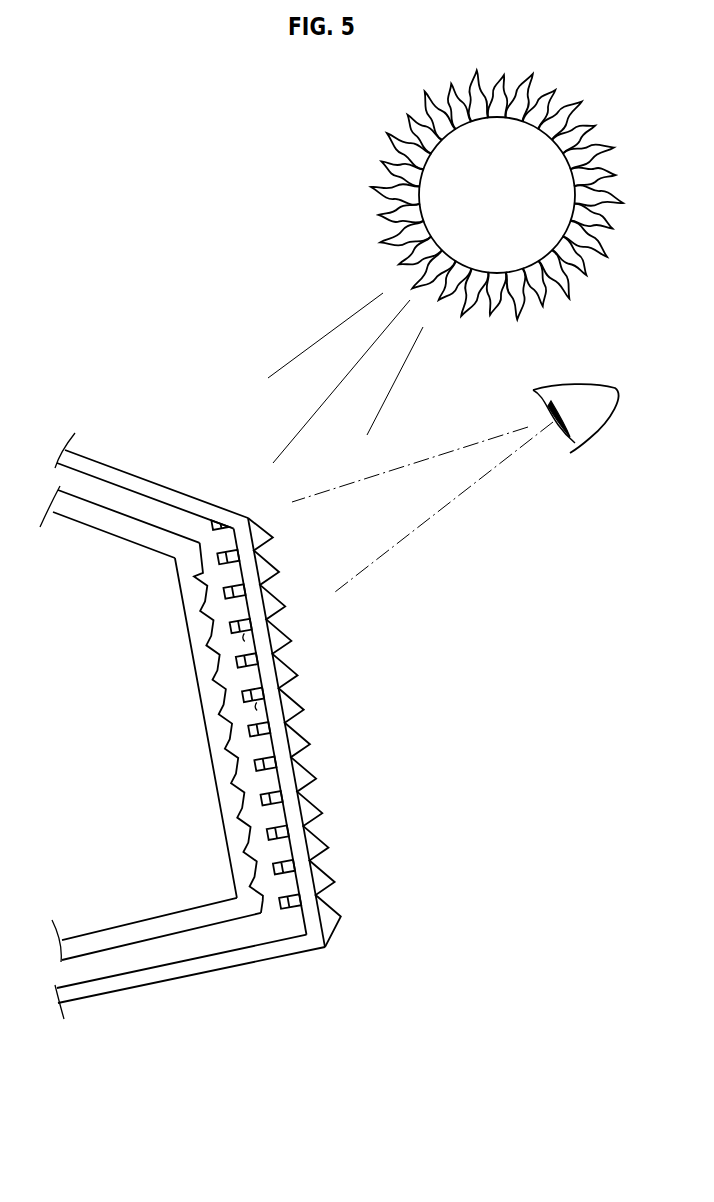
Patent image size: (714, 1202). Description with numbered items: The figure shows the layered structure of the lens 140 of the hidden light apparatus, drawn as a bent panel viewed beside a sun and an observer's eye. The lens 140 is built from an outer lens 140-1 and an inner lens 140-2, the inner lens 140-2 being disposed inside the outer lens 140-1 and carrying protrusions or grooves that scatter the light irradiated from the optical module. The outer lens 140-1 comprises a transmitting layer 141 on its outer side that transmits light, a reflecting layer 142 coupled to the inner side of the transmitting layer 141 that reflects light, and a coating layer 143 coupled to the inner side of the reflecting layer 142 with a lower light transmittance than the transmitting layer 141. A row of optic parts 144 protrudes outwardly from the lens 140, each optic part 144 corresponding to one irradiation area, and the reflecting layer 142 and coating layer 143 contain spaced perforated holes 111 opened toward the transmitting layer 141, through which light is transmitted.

The perforated hole 111 is at (255, 708).
The lens 140 is at (350, 941).
The outer lens 140-1 is at (129, 480).
The inner lens 140-2 is at (103, 523).
The transmitting layer 141 is at (283, 757).
The reflecting layer 142 is at (290, 897).
The coating layer 143 is at (262, 802).
The optic part 144 is at (295, 710).